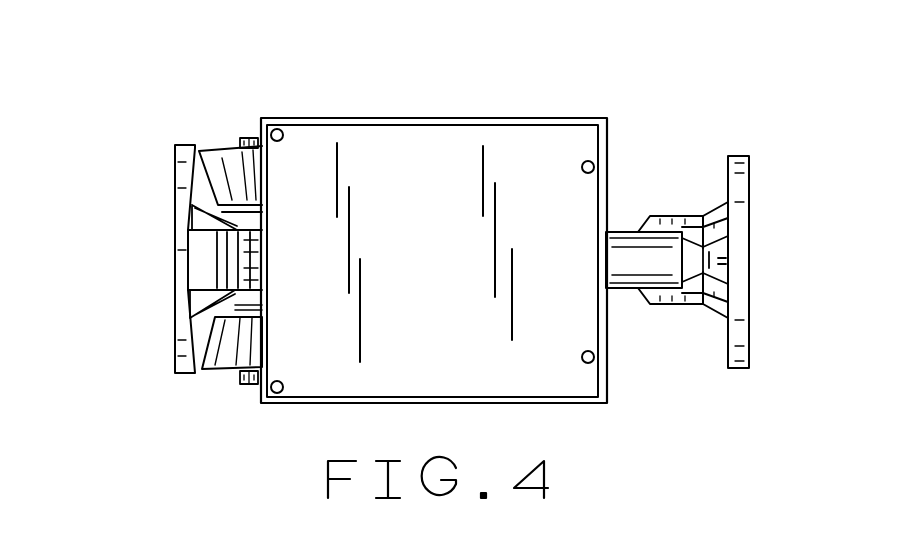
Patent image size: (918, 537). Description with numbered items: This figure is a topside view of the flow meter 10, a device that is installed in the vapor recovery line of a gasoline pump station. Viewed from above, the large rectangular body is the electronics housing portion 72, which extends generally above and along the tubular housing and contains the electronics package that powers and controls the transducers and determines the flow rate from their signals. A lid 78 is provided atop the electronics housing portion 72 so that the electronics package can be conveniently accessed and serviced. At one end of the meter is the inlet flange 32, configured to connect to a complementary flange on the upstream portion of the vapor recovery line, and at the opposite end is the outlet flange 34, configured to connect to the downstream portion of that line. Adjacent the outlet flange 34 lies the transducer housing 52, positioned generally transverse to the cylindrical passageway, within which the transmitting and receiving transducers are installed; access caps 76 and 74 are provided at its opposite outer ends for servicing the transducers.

The flow meter 10 is at (475, 95).
The electronics housing portion 72 is at (302, 120).
The lid 78 is at (394, 158).
The inlet flange 32 is at (752, 203).
The outlet flange 34 is at (170, 320).
The transducer housing 52 is at (222, 369).
The access cap 76 is at (252, 138).
The access cap 74 is at (246, 385).